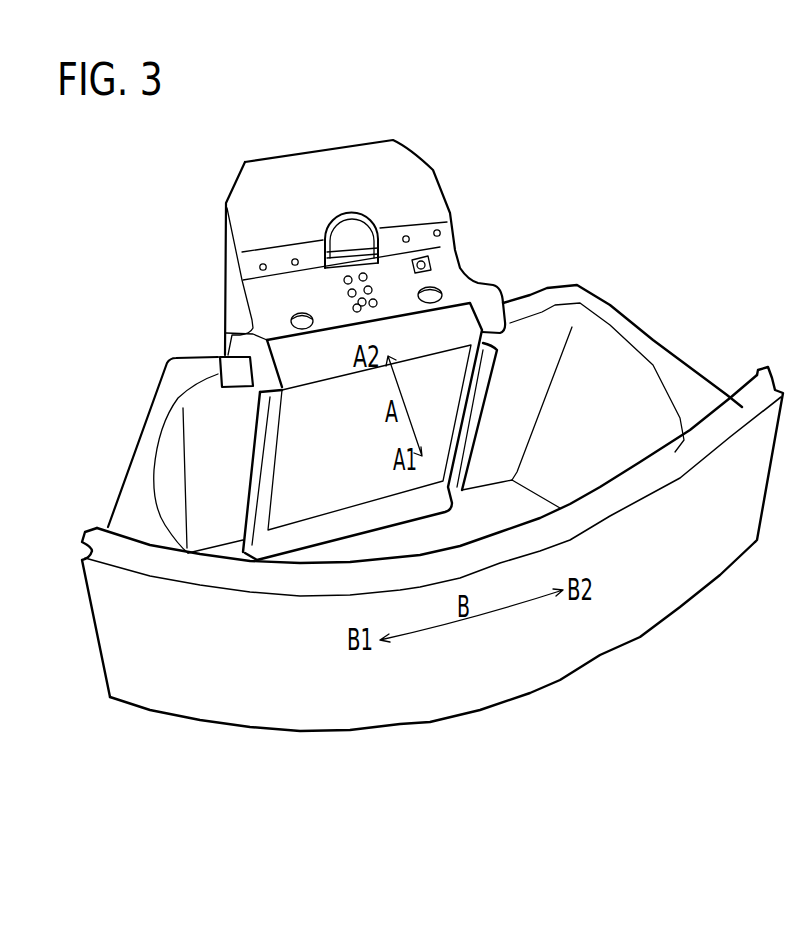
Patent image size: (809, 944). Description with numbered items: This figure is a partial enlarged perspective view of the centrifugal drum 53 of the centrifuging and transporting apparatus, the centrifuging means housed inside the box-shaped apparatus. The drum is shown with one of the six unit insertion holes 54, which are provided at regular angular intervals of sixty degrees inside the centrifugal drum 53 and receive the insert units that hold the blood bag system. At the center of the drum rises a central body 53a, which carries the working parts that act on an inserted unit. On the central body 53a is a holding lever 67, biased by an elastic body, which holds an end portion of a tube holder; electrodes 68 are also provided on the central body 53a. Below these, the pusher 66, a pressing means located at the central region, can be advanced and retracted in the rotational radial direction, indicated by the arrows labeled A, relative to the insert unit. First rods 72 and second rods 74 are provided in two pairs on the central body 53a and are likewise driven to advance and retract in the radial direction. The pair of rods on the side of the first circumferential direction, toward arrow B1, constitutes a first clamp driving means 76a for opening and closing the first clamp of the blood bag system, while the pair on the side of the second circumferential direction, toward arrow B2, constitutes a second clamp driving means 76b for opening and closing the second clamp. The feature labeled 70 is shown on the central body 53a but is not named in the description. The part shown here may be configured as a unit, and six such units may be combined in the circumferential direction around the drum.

The centrifugal drum 53 is at (758, 371).
The central body 53a is at (413, 167).
The unit insertion hole 54 is at (641, 366).
The pusher 66 is at (448, 403).
The holding lever 67 is at (350, 227).
The electrodes 68 is at (391, 315).
The opening 70 is at (437, 265).
The first rod 72 is at (295, 258).
The second rod 74 is at (262, 264).
The first clamp driving means 76a is at (160, 213).
The second clamp driving means 76b is at (505, 183).